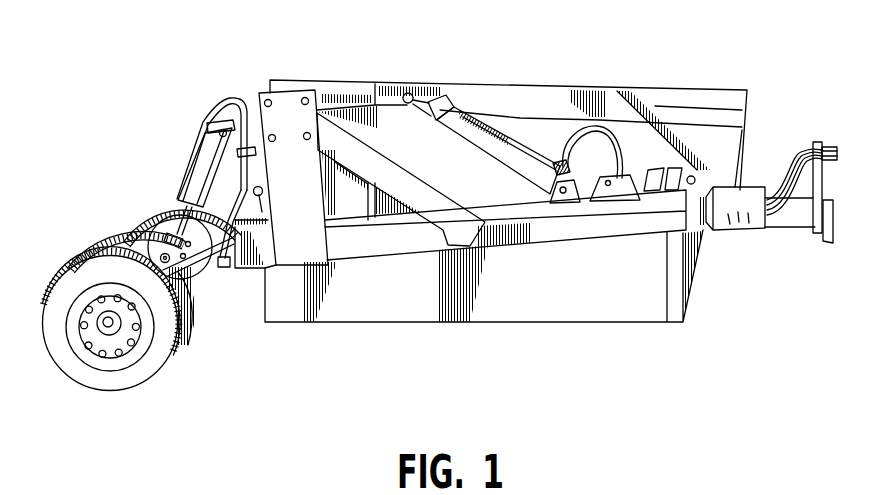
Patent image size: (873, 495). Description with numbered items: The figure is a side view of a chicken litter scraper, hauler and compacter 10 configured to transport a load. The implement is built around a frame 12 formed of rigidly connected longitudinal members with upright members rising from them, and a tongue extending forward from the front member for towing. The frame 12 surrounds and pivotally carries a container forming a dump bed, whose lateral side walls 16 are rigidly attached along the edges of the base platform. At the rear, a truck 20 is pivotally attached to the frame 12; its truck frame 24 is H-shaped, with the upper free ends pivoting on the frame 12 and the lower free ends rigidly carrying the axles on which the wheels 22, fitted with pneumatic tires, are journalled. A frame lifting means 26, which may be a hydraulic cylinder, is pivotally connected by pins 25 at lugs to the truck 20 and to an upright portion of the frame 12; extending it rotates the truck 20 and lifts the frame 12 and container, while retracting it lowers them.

The chicken litter scraper, hauler and compacter 10 is at (488, 50).
The frame 12 is at (727, 217).
The lateral side walls 16 is at (544, 100).
The truck 20 is at (60, 243).
The wheels 22 is at (133, 372).
The truck frame 24 is at (205, 263).
The pins 25 is at (160, 261).
The frame lifting means 26 is at (201, 181).